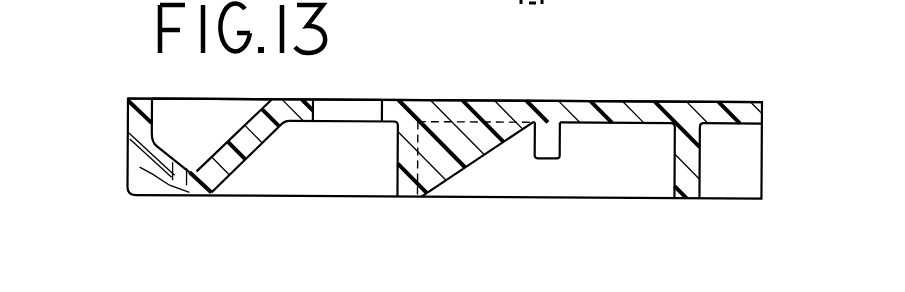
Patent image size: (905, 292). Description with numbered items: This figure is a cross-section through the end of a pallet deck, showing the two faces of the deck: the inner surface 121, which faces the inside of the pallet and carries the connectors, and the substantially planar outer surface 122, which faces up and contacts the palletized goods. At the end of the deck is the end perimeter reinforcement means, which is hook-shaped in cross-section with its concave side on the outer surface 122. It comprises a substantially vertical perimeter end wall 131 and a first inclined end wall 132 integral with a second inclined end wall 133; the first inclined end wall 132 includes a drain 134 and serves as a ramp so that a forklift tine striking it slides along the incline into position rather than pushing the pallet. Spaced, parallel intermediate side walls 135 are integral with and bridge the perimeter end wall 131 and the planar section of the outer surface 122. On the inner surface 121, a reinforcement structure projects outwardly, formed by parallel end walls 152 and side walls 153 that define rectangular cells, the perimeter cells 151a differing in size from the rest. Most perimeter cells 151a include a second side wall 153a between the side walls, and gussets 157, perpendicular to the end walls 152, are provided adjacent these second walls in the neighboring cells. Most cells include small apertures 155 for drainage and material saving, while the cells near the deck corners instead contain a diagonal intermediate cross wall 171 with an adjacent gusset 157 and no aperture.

The inner surface 121 is at (368, 224).
The outer surface 122 is at (609, 72).
The perimeter end wall 131 is at (137, 123).
The first inclined end wall 132 is at (140, 167).
The second inclined end wall 133 is at (247, 178).
The drain 134 is at (180, 190).
The intermediate side walls 135 is at (185, 110).
The perimeter cells 151a is at (297, 172).
The end walls 152 is at (402, 190).
The side walls 153 is at (740, 143).
The second side wall 153a is at (388, 115).
The apertures 155 is at (335, 108).
The gussets 157 is at (476, 165).
The diagonal intermediate cross wall 171 is at (553, 162).